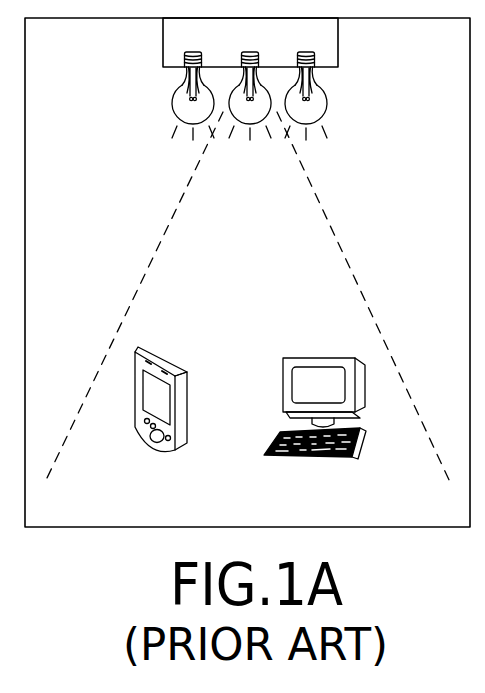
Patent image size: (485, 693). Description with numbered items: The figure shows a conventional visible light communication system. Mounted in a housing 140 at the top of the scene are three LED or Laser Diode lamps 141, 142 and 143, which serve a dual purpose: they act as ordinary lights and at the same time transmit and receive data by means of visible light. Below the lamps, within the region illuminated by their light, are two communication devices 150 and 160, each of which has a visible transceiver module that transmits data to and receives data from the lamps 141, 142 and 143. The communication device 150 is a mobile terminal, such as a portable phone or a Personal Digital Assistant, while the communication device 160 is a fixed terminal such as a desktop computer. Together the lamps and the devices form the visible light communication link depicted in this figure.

The lamp housing 140 is at (338, 42).
The LED or Laser Diode lamp 141 is at (172, 103).
The LED or Laser Diode lamp 142 is at (250, 143).
The LED or Laser Diode lamp 143 is at (327, 103).
The communication device 150 is at (166, 352).
The communication device 160 is at (320, 357).